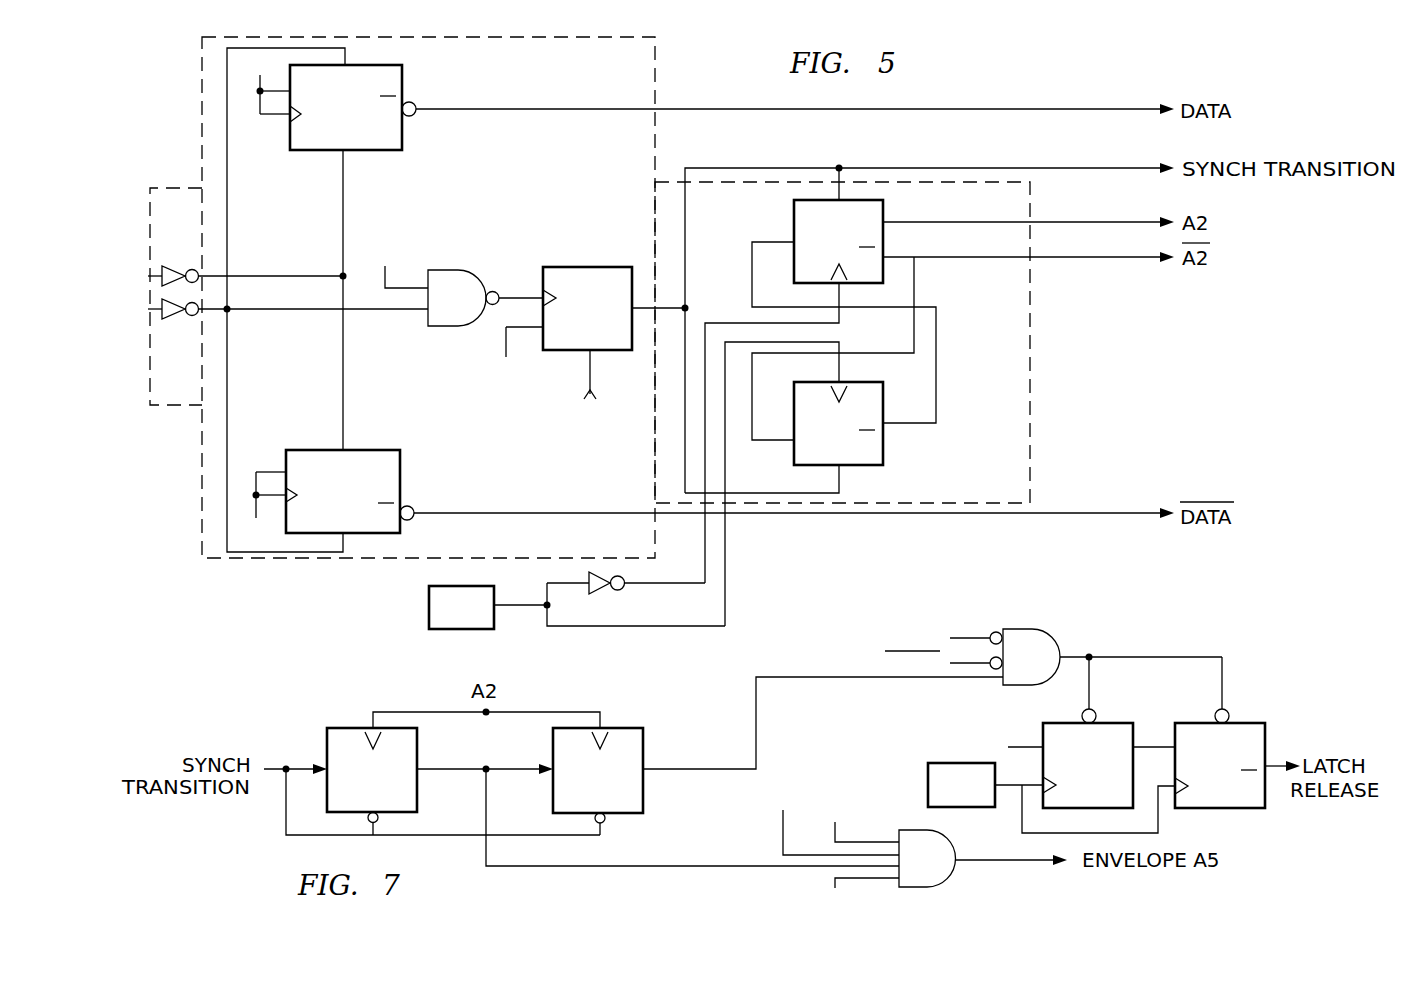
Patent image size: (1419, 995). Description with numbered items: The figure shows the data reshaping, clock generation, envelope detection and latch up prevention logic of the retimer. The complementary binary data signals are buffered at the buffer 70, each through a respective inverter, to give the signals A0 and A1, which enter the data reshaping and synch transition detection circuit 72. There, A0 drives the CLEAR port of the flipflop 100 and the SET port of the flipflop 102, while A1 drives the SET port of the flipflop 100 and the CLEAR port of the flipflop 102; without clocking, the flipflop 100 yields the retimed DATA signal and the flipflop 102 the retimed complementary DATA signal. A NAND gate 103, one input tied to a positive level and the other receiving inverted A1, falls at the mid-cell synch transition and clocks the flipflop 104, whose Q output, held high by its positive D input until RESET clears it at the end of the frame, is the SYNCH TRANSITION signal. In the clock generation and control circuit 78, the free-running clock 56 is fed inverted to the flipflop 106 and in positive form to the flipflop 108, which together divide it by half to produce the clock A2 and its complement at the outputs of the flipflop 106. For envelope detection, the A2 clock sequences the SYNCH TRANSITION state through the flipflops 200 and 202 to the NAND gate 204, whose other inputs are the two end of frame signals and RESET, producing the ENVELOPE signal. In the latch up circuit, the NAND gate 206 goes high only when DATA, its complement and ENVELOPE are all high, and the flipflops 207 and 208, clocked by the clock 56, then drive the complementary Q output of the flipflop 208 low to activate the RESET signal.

In FIG. 5, the free-running CLOCK 56 is at (429, 607).
In FIG. 7, the free-running CLOCK 56 is at (928, 787).
In FIG. 5, the buffer 70 is at (172, 186).
In FIG. 5, the data reshaping and synch transition detection circuit 72 is at (656, 50).
In FIG. 5, the clock generation and control circuit 78 is at (1031, 320).
In FIG. 5, the flipflop 100 is at (403, 137).
In FIG. 5, the flipflop 102 is at (401, 462).
In FIG. 5, the NAND gate 103 is at (458, 270).
In FIG. 5, the flipflop 104 is at (575, 267).
In FIG. 5, the flipflop 106 is at (794, 212).
In FIG. 5, the flipflop 108 is at (884, 447).
In FIG. 7, the flipflop 200 is at (349, 728).
In FIG. 7, the flipflop 202 is at (644, 793).
In FIG. 7, the NAND gate 204 is at (951, 872).
In FIG. 7, the NAND gate 206 is at (1044, 629).
In FIG. 7, the flipflop 207 is at (1113, 723).
In FIG. 7, the flipflop 208 is at (1246, 723).